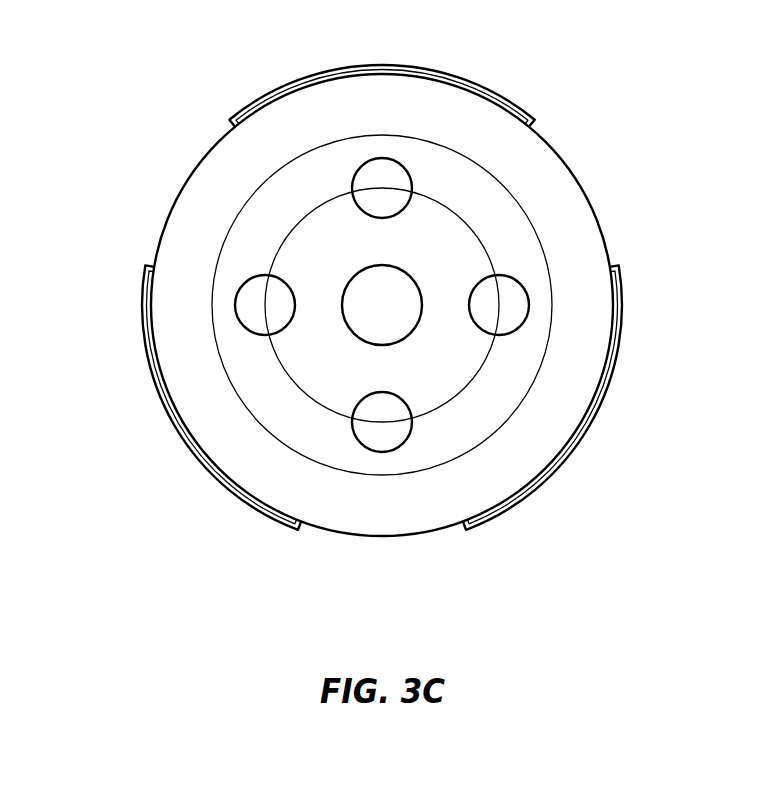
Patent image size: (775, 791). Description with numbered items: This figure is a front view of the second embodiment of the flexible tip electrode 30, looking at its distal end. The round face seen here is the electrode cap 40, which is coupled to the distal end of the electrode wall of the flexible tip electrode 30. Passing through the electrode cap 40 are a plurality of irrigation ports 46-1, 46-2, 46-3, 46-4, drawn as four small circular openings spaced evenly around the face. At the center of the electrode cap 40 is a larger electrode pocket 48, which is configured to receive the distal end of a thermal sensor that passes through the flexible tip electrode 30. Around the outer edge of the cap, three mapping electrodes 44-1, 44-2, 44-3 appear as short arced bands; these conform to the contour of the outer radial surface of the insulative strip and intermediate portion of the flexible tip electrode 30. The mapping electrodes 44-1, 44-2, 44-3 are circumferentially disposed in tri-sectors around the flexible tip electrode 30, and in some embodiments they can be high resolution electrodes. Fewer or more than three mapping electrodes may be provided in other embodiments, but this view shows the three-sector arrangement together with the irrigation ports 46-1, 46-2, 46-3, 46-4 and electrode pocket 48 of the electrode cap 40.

The flexible tip electrode 30 is at (194, 66).
The electrode cap 40 is at (347, 508).
The electrode pocket 48 is at (370, 288).
The irrigation port 46-1 is at (382, 175).
The irrigation port 46-2 is at (253, 309).
The irrigation port 46-3 is at (382, 435).
The irrigation port 46-4 is at (513, 307).
The mapping electrode 44-1 is at (557, 470).
The mapping electrode 44-2 is at (443, 70).
The mapping electrode 44-3 is at (195, 457).